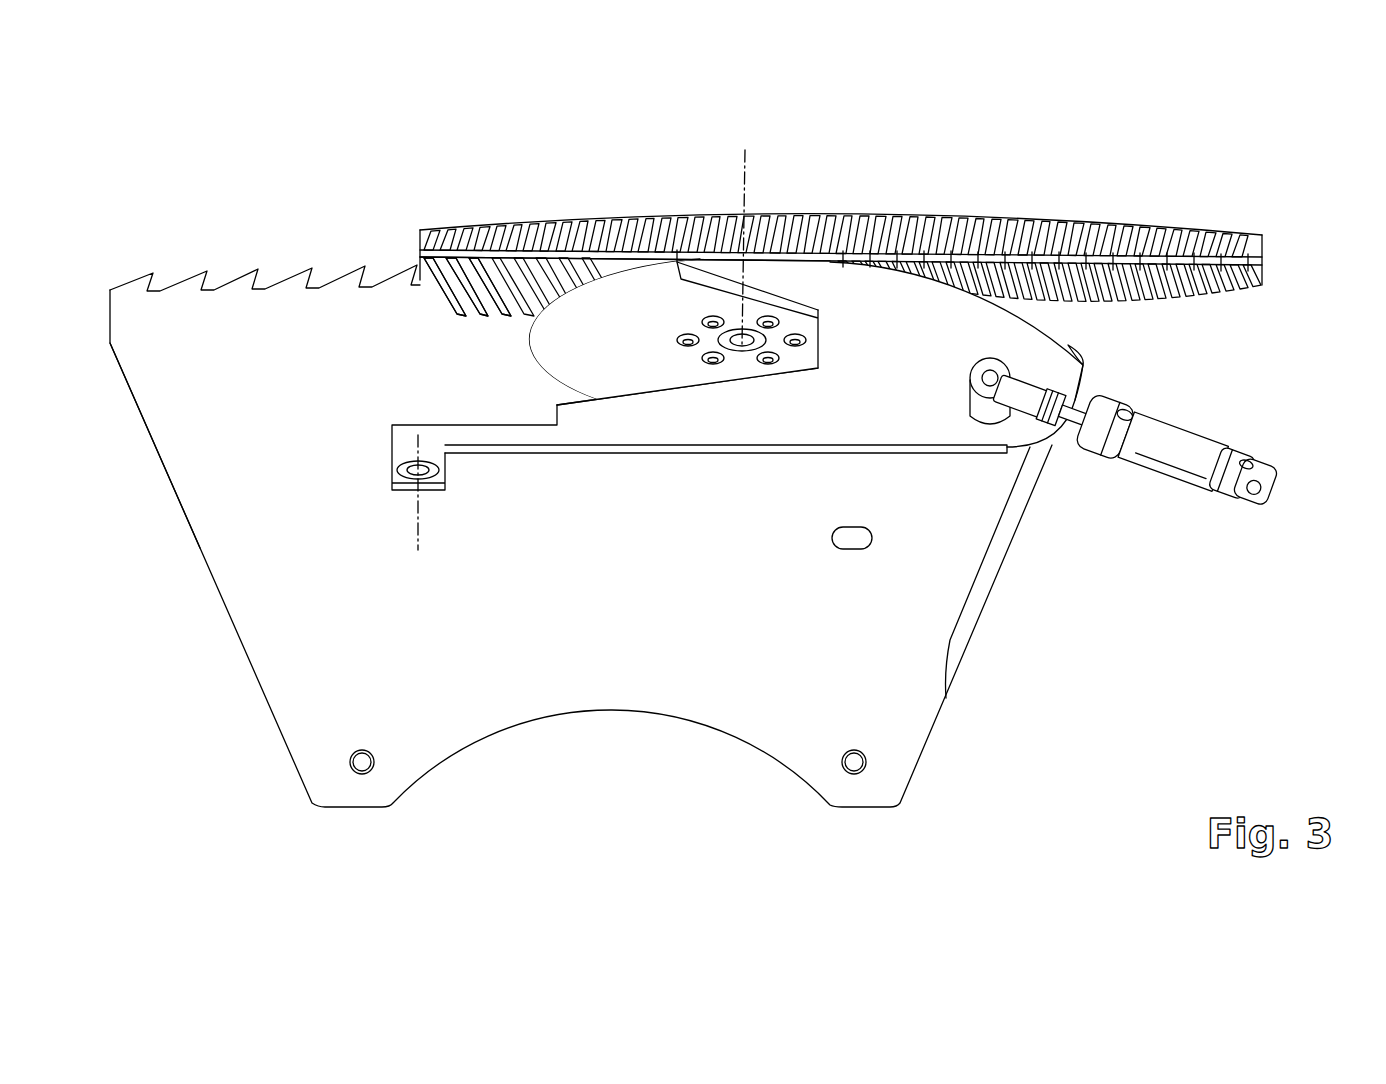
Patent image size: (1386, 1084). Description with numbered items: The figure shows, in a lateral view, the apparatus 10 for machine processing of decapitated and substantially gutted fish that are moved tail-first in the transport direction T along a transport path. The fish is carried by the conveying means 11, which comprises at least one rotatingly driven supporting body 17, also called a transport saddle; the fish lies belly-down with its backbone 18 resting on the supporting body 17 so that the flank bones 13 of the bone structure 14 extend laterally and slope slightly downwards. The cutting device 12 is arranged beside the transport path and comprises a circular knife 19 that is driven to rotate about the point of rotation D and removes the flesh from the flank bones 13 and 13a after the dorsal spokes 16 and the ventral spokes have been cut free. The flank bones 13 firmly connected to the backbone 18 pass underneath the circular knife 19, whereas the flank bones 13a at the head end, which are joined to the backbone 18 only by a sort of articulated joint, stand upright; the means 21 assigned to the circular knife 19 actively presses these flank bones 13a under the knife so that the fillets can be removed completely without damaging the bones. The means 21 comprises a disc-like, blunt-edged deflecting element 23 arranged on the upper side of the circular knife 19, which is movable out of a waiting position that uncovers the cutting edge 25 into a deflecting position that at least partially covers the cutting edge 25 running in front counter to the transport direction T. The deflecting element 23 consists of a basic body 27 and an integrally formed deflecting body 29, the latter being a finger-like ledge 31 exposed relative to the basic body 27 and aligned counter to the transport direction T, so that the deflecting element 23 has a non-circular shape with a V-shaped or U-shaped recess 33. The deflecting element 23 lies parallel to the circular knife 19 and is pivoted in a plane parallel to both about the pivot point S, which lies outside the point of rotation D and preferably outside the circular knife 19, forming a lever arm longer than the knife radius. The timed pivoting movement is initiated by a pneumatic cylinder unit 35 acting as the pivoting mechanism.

The apparatus 10 is at (1256, 180).
The conveying means 11 is at (1020, 679).
The cutting device 12 is at (1226, 368).
The flank bones 13 is at (480, 283).
The flank bones 13a is at (498, 322).
The bone structure 14 is at (998, 201).
The dorsal spokes 16 is at (568, 228).
The supporting body 17 is at (280, 598).
The backbone 18 is at (655, 260).
The circular knife 19 is at (565, 362).
The means for holding down flank bones 21 is at (727, 462).
The deflecting element 23 is at (870, 408).
The cutting edge 25 is at (530, 338).
The basic body 27 is at (645, 427).
The deflecting body 29 is at (810, 281).
The finger-like ledge 31 is at (725, 275).
The recess 33 is at (626, 378).
The pneumatic cylinder unit 35 is at (1157, 497).
The point of rotation D is at (752, 233).
The pivot point S is at (418, 548).
The transport direction T is at (325, 243).